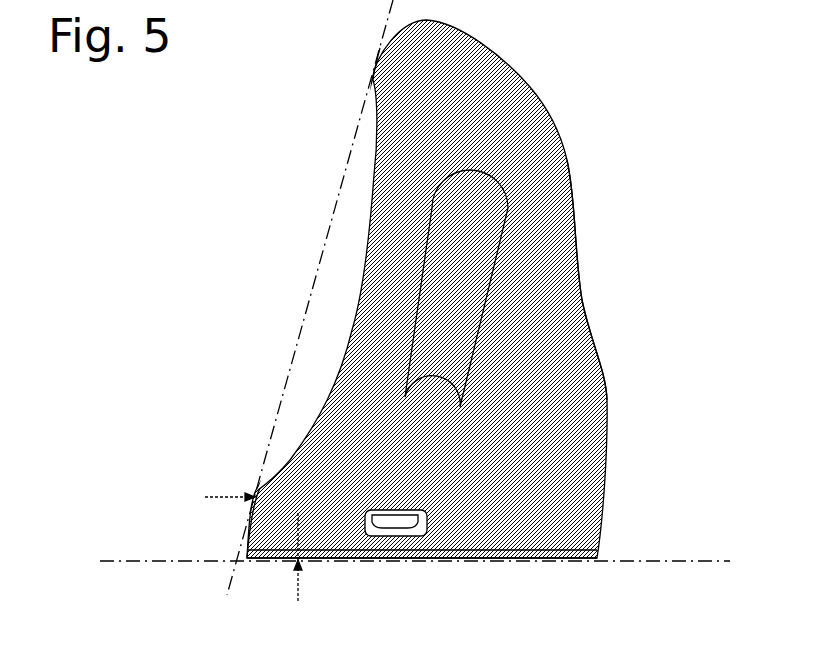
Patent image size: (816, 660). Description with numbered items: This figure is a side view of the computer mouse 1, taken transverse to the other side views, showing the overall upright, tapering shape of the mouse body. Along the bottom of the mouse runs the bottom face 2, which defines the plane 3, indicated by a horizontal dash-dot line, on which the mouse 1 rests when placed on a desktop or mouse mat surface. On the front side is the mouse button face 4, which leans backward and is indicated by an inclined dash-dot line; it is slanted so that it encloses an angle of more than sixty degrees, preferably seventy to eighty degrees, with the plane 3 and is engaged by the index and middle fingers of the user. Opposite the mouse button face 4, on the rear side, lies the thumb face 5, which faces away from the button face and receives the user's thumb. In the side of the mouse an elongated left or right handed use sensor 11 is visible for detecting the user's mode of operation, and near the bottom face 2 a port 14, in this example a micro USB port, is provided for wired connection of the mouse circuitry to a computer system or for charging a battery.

The computer mouse 1 is at (462, 323).
The bottom face 2 is at (483, 559).
The plane 3 is at (656, 561).
The mouse button face 4 is at (331, 321).
The thumb face 5 is at (536, 296).
The left or right handed use sensor 11 is at (484, 245).
The port 14 is at (395, 522).